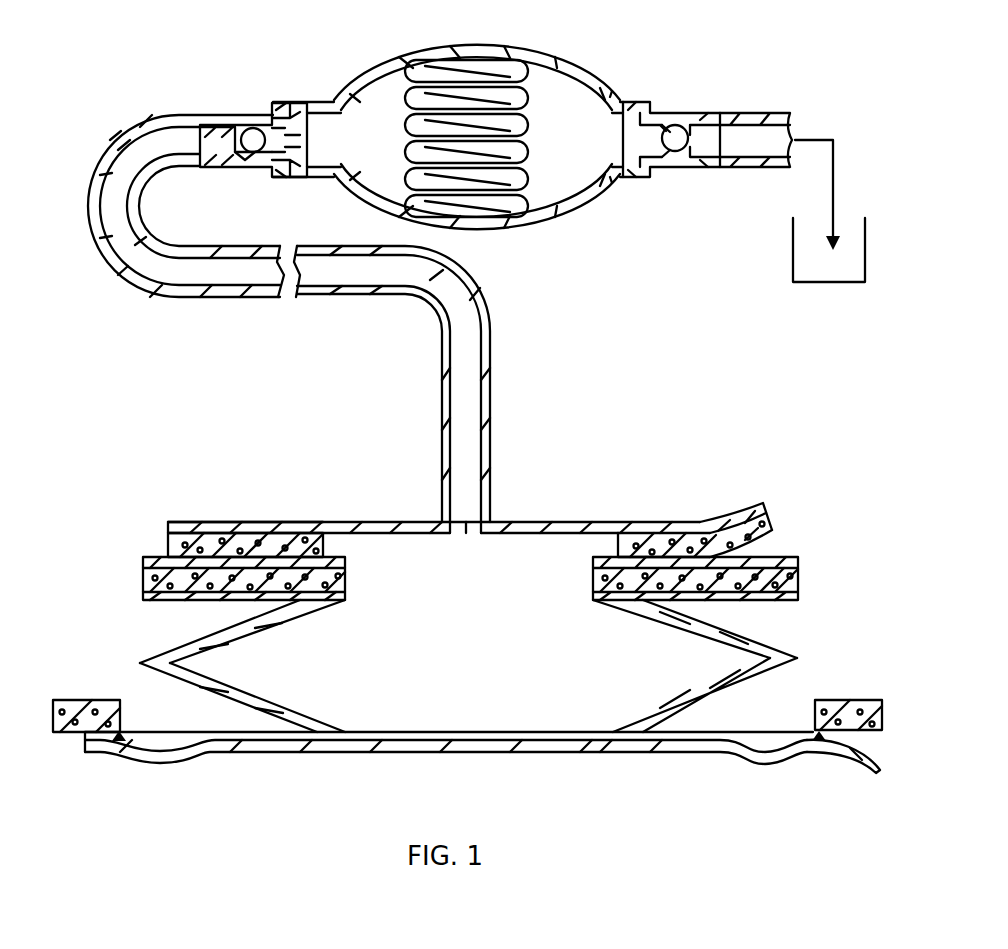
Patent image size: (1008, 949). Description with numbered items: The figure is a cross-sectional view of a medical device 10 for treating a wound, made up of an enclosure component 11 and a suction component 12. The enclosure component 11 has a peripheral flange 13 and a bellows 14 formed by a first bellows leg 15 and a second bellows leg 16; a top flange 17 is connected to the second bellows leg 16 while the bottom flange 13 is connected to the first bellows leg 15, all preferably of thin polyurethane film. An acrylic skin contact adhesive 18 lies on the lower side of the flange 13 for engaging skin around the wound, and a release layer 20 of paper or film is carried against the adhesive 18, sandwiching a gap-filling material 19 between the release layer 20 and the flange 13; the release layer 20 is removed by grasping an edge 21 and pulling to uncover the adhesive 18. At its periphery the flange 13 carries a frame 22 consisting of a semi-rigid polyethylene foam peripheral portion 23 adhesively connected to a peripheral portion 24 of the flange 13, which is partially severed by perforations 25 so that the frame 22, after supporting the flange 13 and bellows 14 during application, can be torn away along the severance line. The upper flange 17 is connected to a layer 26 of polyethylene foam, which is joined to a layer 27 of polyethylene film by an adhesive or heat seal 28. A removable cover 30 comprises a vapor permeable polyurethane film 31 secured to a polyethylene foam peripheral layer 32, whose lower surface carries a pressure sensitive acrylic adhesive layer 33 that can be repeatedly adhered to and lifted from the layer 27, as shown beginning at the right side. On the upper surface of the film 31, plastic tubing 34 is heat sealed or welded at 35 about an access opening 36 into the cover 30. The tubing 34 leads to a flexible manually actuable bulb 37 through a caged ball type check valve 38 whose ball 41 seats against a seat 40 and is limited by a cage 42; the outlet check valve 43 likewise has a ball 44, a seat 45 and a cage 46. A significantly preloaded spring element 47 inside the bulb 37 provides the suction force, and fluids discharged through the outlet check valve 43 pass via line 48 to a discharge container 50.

The medical device 10 is at (311, 510).
The enclosure component 11 is at (439, 479).
The suction component 12 is at (178, 104).
The peripheral flange 13 is at (486, 780).
The bellows 14 is at (489, 666).
The first bellows leg 15 is at (770, 672).
The second bellows leg 16 is at (733, 636).
The top flange 17 is at (799, 596).
The adhesive 18 is at (677, 744).
The gap-filling material 19 is at (158, 756).
The release layer 20 is at (248, 752).
The edge 21 is at (870, 766).
The frame 22 is at (475, 684).
The foam peripheral portion 23 is at (882, 716).
The peripheral portion of the flange 24 is at (878, 772).
The perforations 25 is at (840, 742).
The polyethylene foam layer 26 is at (799, 586).
The polyethylene film layer 27 is at (786, 560).
The adhesive or heat seal 28 is at (800, 566).
The removable cover 30 is at (640, 533).
The vapor permeable polyurethane film 31 is at (727, 521).
The foam peripheral layer 32 is at (770, 522).
The pressure sensitive acrylic adhesive layer 33 is at (766, 512).
The plastic tubing 34 is at (490, 322).
The heat seal or weld 35 is at (492, 518).
The access opening 36 is at (468, 522).
The flexible manually actuable bulb 37 is at (364, 72).
The caged ball type check valve 38 is at (245, 135).
The seat 40 is at (248, 154).
The ball 41 is at (255, 128).
The cage 42 is at (292, 154).
The outlet check valve 43 is at (677, 135).
The ball 44 is at (678, 132).
The seat 45 is at (662, 118).
The cage 46 is at (690, 164).
The spring element 47 is at (536, 80).
The line 48 is at (818, 135).
The discharge container 50 is at (792, 232).